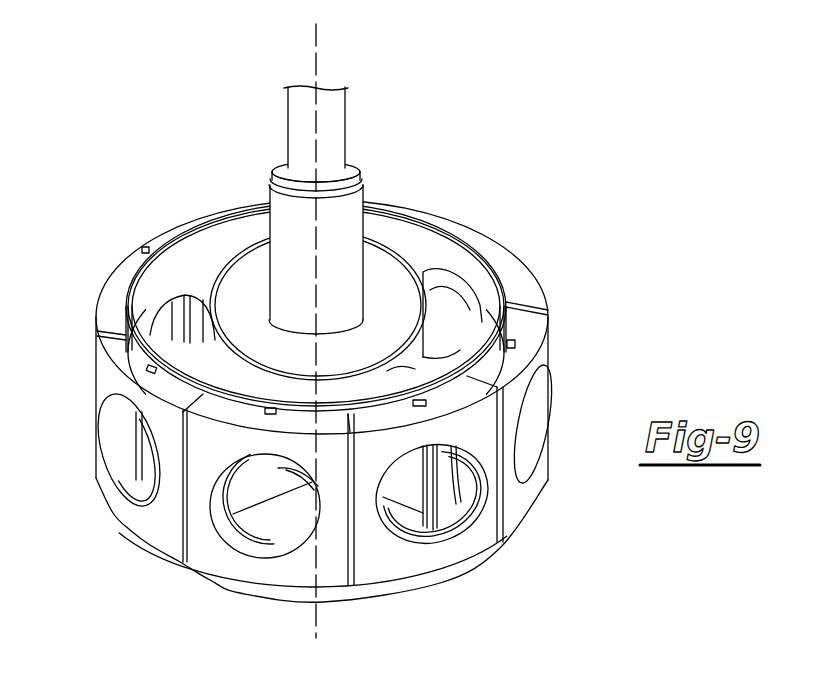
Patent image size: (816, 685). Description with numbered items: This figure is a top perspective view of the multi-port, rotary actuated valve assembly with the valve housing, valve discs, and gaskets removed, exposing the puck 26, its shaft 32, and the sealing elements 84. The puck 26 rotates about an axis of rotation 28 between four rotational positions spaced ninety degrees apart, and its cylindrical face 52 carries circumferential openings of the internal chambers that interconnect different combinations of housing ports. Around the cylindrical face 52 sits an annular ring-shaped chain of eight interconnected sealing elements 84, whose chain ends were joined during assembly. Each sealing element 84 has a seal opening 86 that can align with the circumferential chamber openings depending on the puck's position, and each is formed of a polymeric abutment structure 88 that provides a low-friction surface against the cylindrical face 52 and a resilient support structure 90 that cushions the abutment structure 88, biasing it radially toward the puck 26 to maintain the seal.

The puck 26 is at (423, 215).
The axis of rotation 28 is at (316, 48).
The shaft 32 is at (303, 120).
The cylindrical face 52 is at (167, 350).
The sealing elements 84 is at (365, 421).
The seal opening 86 is at (262, 498).
The abutment structure 88 is at (272, 408).
The support structure 90 is at (430, 558).